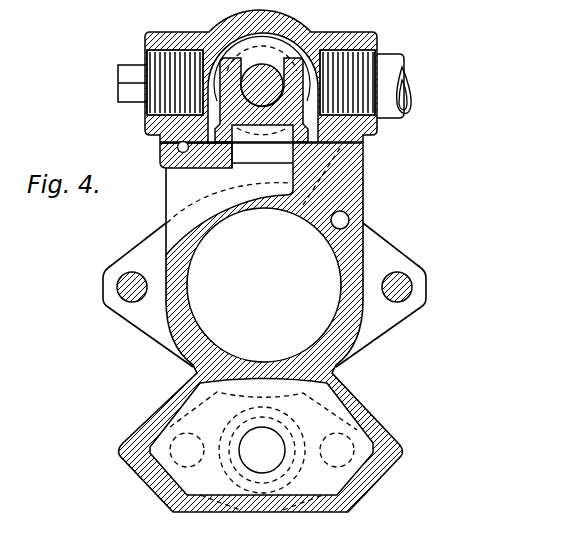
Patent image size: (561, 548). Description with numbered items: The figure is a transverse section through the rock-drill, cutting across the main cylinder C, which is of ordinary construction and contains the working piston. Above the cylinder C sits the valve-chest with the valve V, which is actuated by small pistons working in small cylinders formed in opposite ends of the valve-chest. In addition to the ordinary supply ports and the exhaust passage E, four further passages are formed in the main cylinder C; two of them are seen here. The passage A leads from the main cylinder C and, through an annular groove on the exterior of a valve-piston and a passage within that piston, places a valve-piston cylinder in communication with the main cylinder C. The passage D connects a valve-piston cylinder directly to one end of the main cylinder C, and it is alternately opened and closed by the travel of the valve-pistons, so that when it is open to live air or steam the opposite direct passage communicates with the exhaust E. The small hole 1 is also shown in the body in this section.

The passage A is at (337, 163).
The passage D is at (177, 146).
The exhaust passage E is at (229, 199).
The valve V is at (262, 135).
The cylinder C is at (264, 285).
The port hole 1 is at (349, 220).